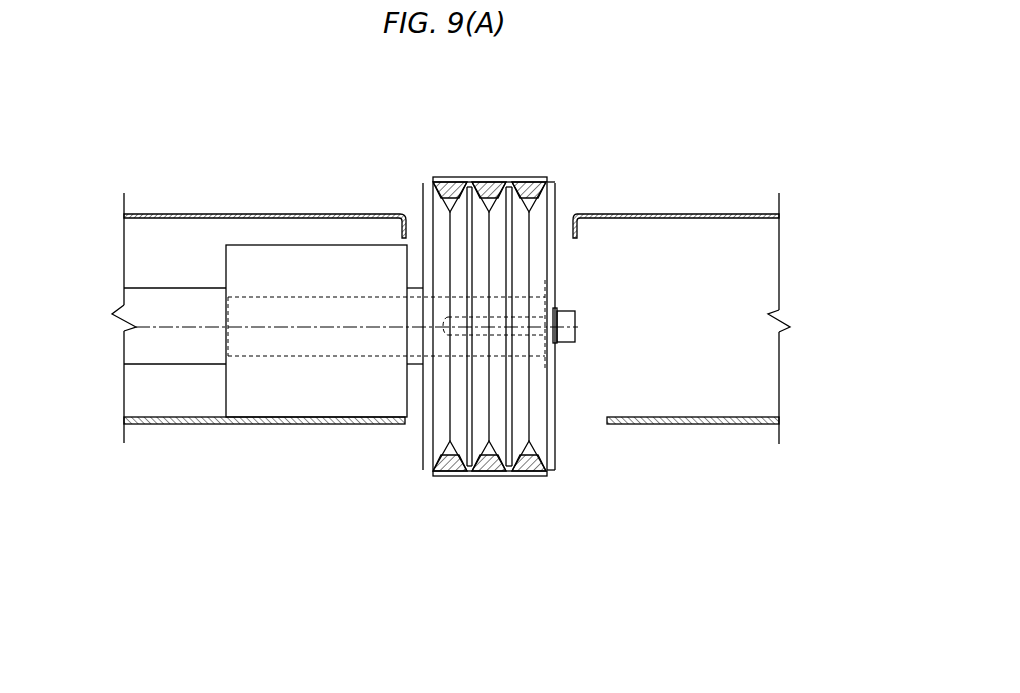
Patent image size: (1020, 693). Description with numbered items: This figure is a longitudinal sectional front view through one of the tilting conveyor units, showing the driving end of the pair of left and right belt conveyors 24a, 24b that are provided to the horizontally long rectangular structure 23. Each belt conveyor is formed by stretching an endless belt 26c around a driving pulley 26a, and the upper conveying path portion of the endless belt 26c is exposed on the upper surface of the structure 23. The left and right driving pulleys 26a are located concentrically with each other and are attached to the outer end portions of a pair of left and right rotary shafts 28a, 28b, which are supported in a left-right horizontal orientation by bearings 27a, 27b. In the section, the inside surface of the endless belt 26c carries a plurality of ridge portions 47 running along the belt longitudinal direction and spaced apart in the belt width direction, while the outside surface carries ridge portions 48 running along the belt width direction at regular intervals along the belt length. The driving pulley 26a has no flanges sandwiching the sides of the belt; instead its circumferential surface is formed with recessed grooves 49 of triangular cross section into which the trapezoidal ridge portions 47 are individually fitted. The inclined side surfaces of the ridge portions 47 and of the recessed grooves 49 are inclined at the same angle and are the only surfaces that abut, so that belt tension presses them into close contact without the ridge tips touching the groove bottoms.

The structure 23 is at (667, 214).
The belt conveyor 24a is at (580, 481).
The belt conveyor 24b is at (565, 461).
The driving pulley 26a is at (558, 394).
The endless belt 26c is at (538, 176).
The bearing 27a is at (316, 287).
The bearing 27b is at (313, 267).
The rotary shaft 28a is at (312, 389).
The rotary shaft 28b is at (178, 345).
The ridge portion 47 is at (487, 178).
The ridge portion 48 is at (488, 336).
The recessed groove 49 is at (536, 264).